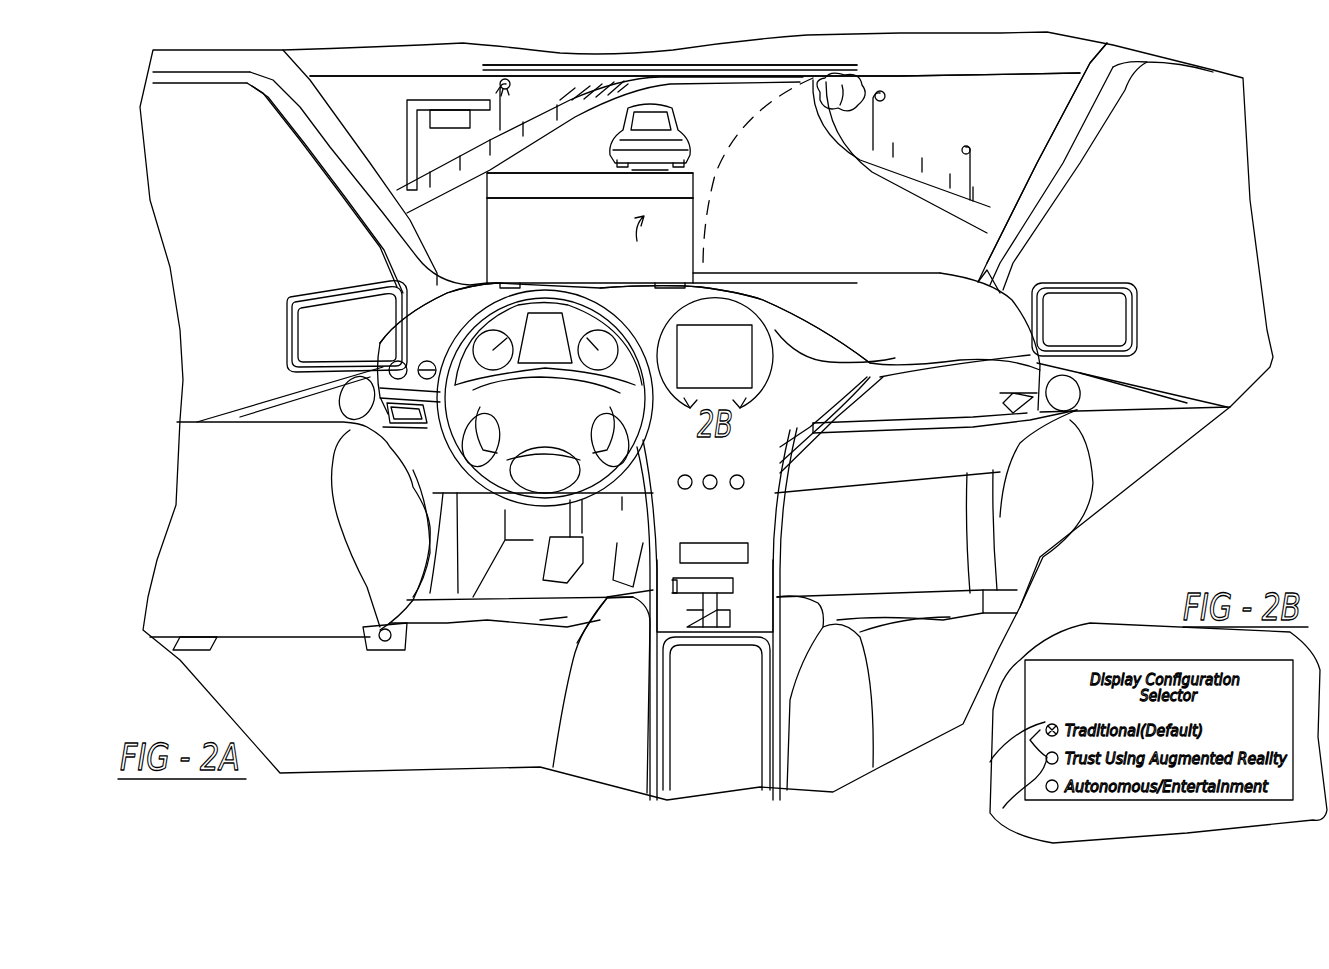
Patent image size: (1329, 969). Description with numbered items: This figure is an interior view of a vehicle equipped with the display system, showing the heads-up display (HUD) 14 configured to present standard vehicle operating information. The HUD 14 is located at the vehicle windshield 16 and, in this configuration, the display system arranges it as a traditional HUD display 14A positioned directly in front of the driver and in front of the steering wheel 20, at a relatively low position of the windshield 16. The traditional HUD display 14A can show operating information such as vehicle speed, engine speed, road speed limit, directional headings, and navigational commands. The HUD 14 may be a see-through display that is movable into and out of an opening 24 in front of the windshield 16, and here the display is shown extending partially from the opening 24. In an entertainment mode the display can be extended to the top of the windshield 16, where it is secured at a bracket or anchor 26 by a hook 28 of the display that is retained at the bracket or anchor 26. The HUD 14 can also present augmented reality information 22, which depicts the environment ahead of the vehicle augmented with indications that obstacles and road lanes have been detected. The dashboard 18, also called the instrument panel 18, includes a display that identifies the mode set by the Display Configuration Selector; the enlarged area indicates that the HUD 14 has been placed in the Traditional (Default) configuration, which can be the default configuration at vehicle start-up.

The heads-up display (HUD) 14 is at (585, 157).
The traditional HUD display 14A is at (507, 240).
The windshield 16 is at (943, 76).
The dashboard (instrument panel) 18 is at (510, 325).
The steering wheel 20 is at (457, 412).
The augmented reality information 22 is at (540, 185).
The opening 24 is at (767, 273).
The bracket or anchor 26 is at (535, 185).
The hook 28 is at (678, 167).